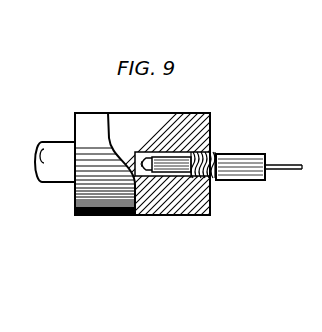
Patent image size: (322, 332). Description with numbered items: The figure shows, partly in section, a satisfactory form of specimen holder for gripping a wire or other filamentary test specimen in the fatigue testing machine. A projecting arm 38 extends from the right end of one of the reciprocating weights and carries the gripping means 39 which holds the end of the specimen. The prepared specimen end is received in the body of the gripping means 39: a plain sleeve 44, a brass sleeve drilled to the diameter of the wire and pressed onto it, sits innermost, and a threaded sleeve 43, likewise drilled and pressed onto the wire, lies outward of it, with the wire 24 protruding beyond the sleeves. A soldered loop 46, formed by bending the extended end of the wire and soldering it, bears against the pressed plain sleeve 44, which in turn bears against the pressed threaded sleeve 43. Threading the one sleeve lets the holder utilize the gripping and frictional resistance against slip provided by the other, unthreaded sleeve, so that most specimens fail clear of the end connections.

The rod 24 is at (288, 164).
The projecting arm 38 is at (58, 148).
The gripping means 39 is at (92, 122).
The threaded sleeve 43 is at (243, 182).
The plain sleeve 44 is at (165, 157).
The soldered loop 46 is at (143, 152).